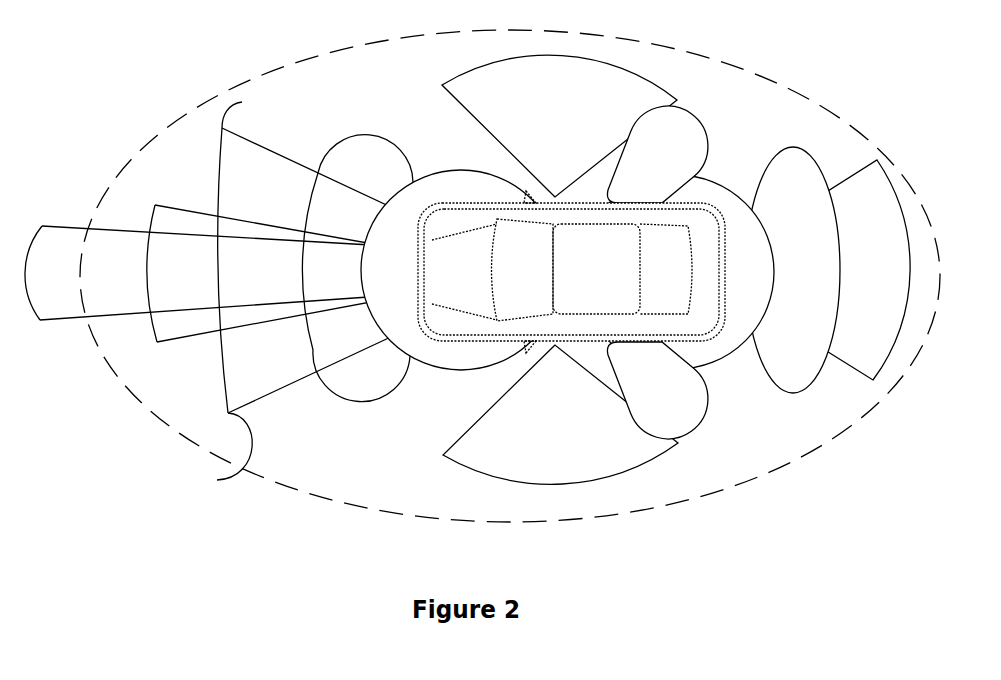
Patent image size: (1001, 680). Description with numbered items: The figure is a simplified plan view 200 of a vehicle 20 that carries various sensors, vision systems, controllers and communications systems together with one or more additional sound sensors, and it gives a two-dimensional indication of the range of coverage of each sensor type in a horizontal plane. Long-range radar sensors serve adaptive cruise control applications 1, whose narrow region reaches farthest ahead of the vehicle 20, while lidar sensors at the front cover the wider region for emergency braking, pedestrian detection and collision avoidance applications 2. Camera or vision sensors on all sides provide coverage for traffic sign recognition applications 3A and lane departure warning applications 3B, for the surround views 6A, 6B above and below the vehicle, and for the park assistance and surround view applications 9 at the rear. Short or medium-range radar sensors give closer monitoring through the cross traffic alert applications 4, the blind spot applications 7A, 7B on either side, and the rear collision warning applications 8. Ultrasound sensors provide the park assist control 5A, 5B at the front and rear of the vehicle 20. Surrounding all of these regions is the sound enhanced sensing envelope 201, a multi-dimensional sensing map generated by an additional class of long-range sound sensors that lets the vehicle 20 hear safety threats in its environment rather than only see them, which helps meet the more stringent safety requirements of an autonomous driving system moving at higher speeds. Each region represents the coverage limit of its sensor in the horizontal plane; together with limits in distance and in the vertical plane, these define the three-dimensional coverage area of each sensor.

The adaptive cruise control application region 1 is at (53, 322).
The emergency braking, pedestrian detection and collision avoidance application regi 2 is at (157, 207).
The traffic sign recognition application region 3A is at (329, 248).
The lane departure warning application region 3B is at (268, 405).
The cross traffic alert application region 4 is at (363, 400).
The park assist control region 5A is at (461, 270).
The park assist control region 5B is at (677, 272).
The surround view region 6A is at (559, 126).
The surround view region 6B is at (560, 414).
The blind spot application region 7A is at (657, 154).
The blind spot application region 7B is at (657, 390).
The rear collision warning application region 8 is at (793, 270).
The park assistance and surround view application region 9 is at (805, 270).
The vehicle 20 is at (571, 272).
The simplified plan view 200 is at (82, 30).
The sound enhanced sensing envelope 201 is at (600, 518).